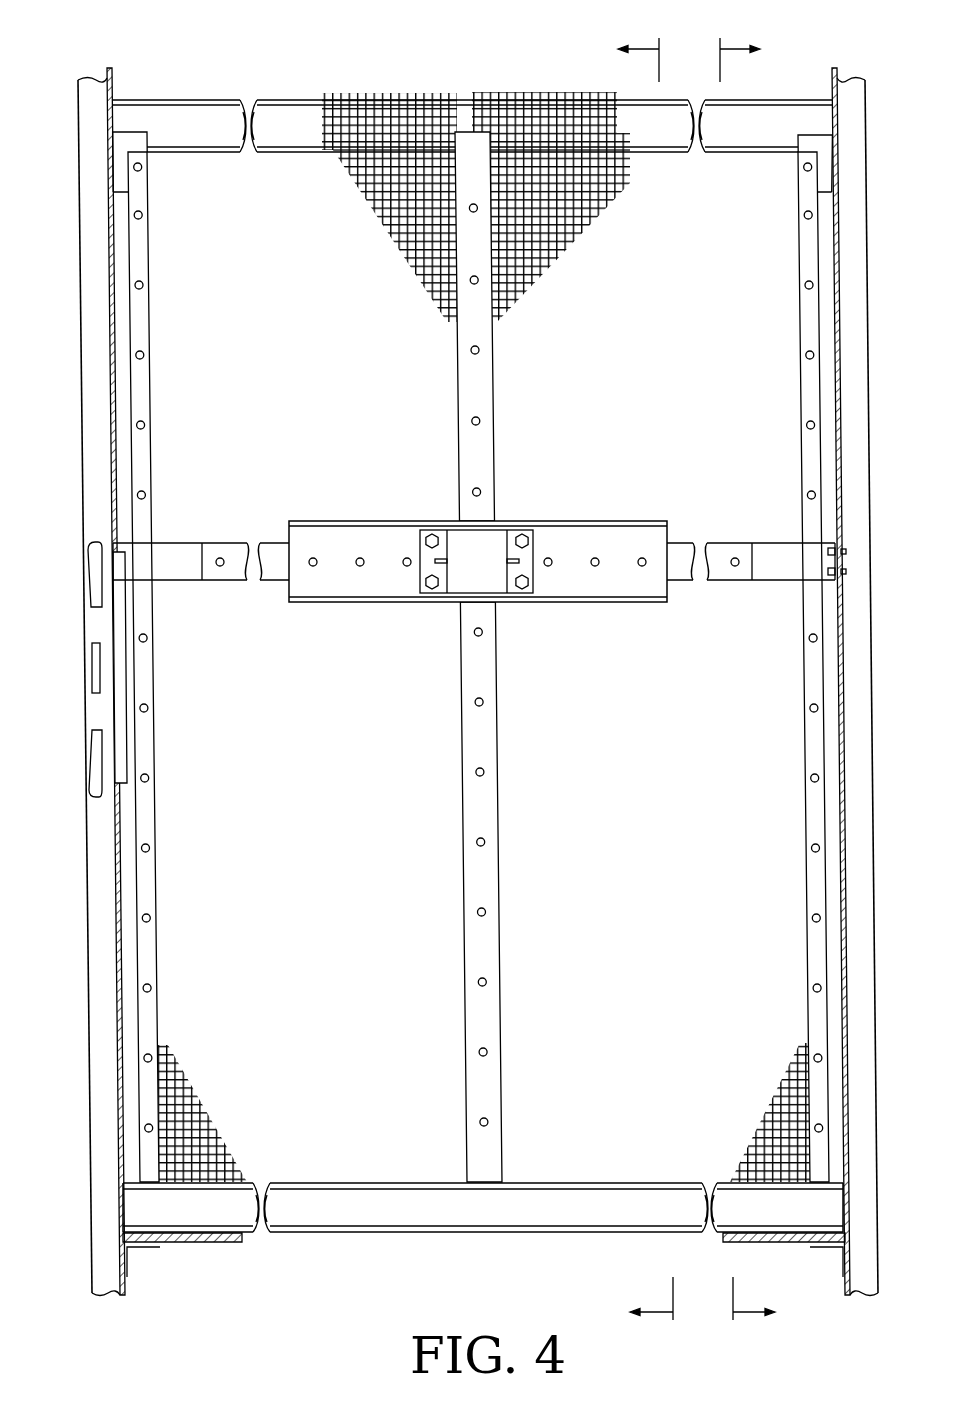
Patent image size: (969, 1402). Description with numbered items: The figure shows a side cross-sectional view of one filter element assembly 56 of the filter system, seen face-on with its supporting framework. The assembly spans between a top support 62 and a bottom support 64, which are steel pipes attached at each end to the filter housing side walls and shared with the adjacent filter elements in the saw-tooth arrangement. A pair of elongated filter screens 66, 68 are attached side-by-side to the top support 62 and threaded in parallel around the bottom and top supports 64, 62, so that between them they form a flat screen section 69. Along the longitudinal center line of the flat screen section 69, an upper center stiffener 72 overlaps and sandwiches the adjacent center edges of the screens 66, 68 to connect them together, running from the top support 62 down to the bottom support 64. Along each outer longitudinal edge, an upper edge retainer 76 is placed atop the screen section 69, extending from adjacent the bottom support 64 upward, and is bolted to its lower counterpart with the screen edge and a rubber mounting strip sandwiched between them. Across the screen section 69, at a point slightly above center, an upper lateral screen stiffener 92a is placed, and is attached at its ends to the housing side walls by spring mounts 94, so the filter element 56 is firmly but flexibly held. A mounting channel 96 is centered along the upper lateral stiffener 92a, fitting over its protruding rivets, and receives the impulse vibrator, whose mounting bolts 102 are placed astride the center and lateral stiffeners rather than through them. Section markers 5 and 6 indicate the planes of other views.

The filter element assembly 56 is at (71, 721).
The top support 62 is at (207, 112).
The bottom support 64 is at (582, 1222).
The filter screen 66 is at (408, 95).
The filter screen 68 is at (540, 97).
The flat screen section 69 is at (203, 1112).
The upper center stiffener 72 is at (482, 373).
The upper edge retainer 76 is at (142, 230).
The upper lateral screen stiffener 92a is at (185, 553).
The spring mount 94 is at (490, 570).
The mounting channel 96 is at (613, 522).
The mounting bolt 102 is at (424, 530).
The section line 5- 5 is at (649, 682).
The section line 6- 6 is at (744, 682).